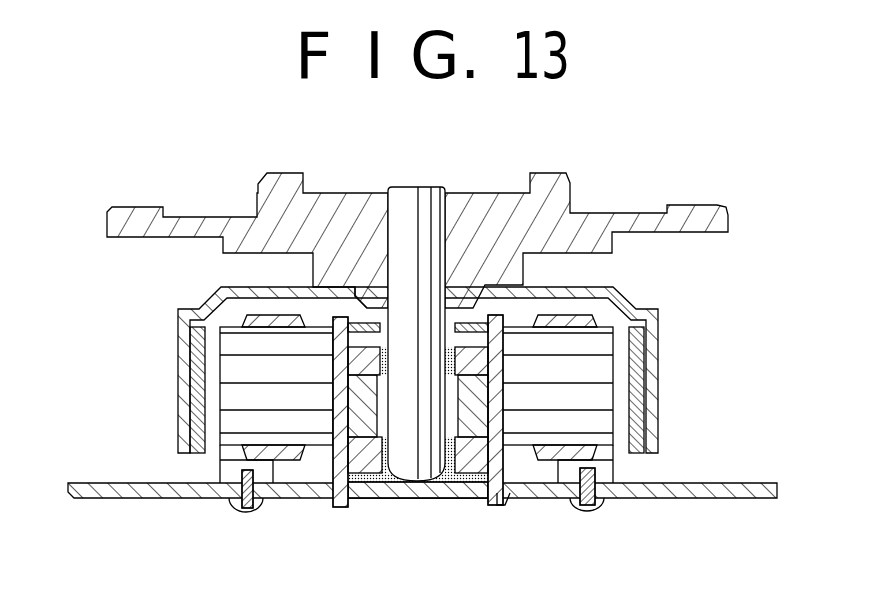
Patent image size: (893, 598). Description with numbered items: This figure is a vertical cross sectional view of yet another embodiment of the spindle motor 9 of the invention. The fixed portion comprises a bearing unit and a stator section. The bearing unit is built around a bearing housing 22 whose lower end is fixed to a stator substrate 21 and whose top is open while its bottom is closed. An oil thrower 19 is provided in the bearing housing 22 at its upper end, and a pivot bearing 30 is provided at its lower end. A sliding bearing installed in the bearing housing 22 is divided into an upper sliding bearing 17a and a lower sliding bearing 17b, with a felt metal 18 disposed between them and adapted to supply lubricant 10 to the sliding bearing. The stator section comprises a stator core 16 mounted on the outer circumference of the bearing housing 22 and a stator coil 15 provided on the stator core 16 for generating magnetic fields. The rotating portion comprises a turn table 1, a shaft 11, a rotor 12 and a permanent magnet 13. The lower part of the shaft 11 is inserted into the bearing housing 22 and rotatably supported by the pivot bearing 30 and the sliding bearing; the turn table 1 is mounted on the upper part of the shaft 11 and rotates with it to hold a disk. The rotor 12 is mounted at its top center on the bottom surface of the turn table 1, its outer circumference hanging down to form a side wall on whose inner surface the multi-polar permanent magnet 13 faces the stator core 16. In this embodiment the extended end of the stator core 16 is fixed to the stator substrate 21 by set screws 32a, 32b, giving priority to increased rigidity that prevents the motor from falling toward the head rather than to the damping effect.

The turn table 1 is at (417, 215).
The spindle motor 9 is at (417, 297).
The lubricant 10 is at (450, 493).
The shaft 11 is at (422, 193).
The rotor 12 is at (638, 300).
The permanent magnet 13 is at (636, 378).
The stator coil 15 is at (585, 450).
The stator core 16 is at (600, 424).
The upper sliding bearing 17a is at (362, 423).
The lower sliding bearing 17b is at (362, 357).
The felt metal 18 is at (354, 400).
The oil thrower 19 is at (355, 297).
The stator substrate 21 is at (103, 498).
The bearing housing 22 is at (500, 483).
The pivot bearing 30 is at (385, 497).
The set screw 32a is at (588, 497).
The set screw 32b is at (240, 510).